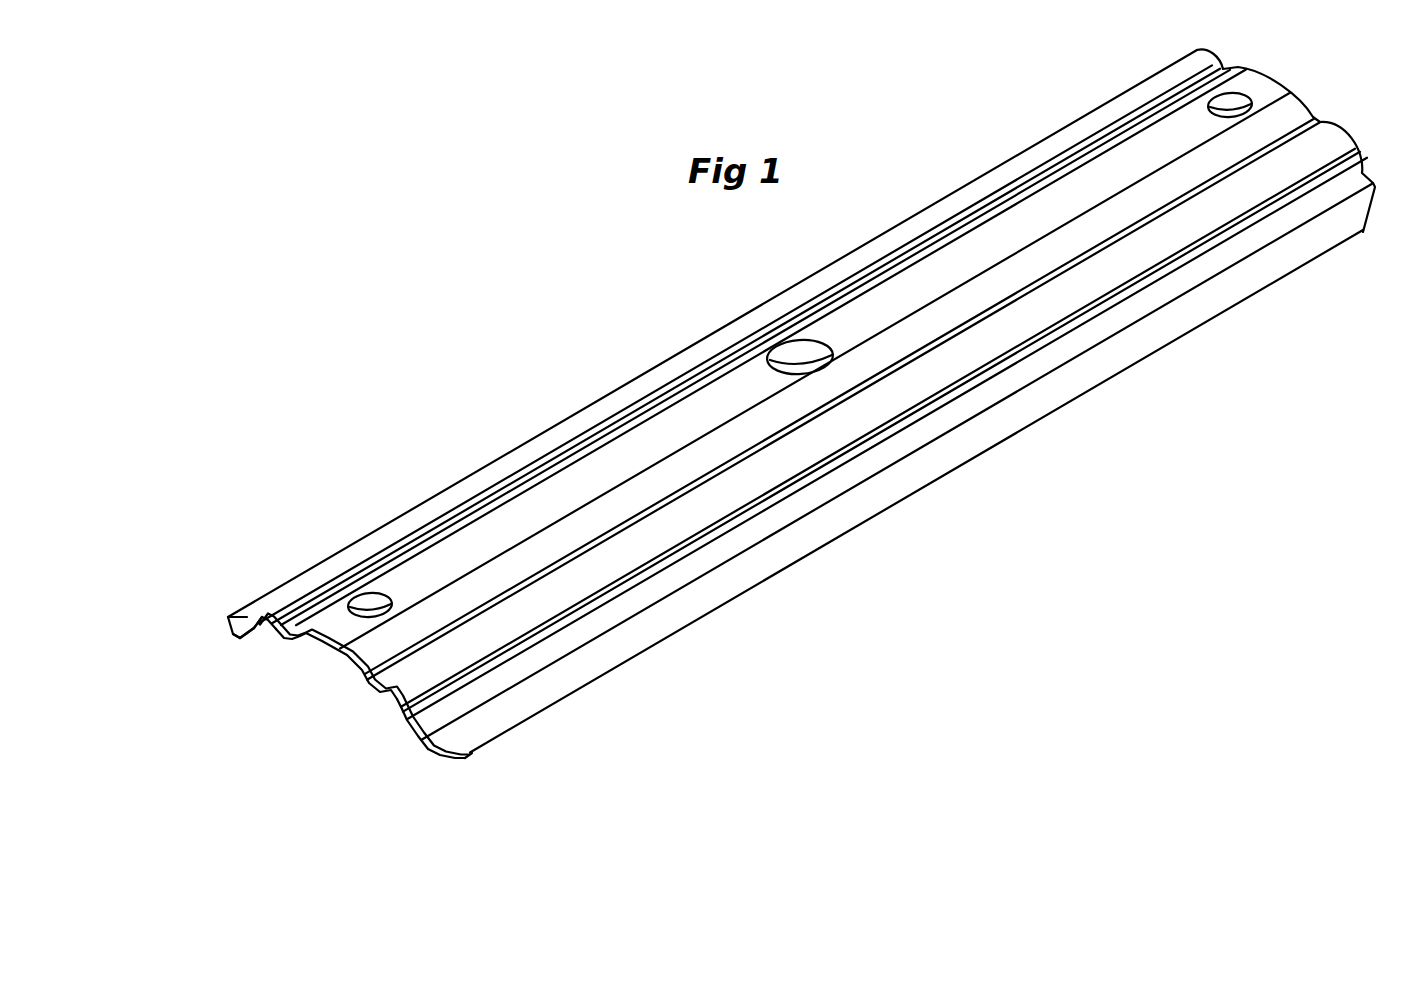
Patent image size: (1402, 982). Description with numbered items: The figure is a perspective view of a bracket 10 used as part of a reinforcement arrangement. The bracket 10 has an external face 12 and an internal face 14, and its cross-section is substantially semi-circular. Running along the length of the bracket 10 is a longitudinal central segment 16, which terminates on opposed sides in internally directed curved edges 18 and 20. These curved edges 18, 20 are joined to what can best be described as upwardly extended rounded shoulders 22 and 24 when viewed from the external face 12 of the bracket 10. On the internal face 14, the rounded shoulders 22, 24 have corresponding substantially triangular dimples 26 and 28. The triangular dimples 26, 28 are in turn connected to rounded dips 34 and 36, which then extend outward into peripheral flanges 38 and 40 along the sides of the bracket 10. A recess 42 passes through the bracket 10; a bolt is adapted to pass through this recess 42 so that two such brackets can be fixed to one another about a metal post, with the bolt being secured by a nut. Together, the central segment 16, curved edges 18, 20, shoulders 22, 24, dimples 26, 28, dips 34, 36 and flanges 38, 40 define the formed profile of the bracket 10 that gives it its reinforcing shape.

The bracket 10 is at (487, 196).
The external face 12 is at (465, 433).
The internal face 14 is at (379, 798).
The longitudinal central segment 16 is at (299, 623).
The internally directed curved edge 18 is at (257, 618).
The internally directed curved edge 20 is at (402, 688).
The upwardly extended rounded shoulder 22 is at (250, 615).
The upwardly extended rounded shoulder 24 is at (477, 743).
The substantially triangular dimple 26 is at (259, 638).
The substantially triangular dimple 28 is at (390, 706).
The rounded dip 34 is at (232, 633).
The rounded dip 36 is at (399, 732).
The peripheral flange 38 is at (228, 617).
The peripheral flange 40 is at (450, 758).
The recess 42 is at (800, 340).